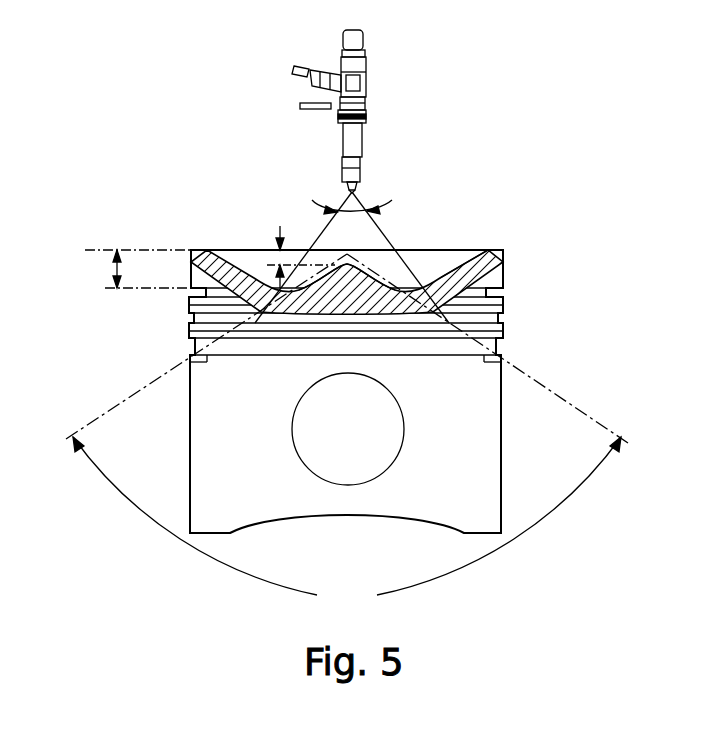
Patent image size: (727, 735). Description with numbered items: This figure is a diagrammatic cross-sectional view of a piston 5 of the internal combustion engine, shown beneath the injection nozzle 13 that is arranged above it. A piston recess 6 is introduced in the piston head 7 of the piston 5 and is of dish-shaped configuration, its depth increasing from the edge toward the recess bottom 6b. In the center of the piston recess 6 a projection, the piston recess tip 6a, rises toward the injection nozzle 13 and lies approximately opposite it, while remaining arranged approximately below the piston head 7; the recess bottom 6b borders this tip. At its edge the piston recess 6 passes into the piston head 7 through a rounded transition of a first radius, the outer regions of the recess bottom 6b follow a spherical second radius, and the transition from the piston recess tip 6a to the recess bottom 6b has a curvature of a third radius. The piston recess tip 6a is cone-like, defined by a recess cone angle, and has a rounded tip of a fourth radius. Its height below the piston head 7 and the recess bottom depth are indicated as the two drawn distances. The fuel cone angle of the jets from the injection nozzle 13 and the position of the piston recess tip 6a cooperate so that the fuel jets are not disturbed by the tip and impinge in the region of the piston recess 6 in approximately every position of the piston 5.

The piston 5 is at (488, 453).
The piston recess 6 is at (429, 289).
The piston recess tip 6a is at (362, 282).
The recess bottom 6b is at (444, 274).
The piston head 7 is at (421, 268).
The injection nozzle 13 is at (366, 92).